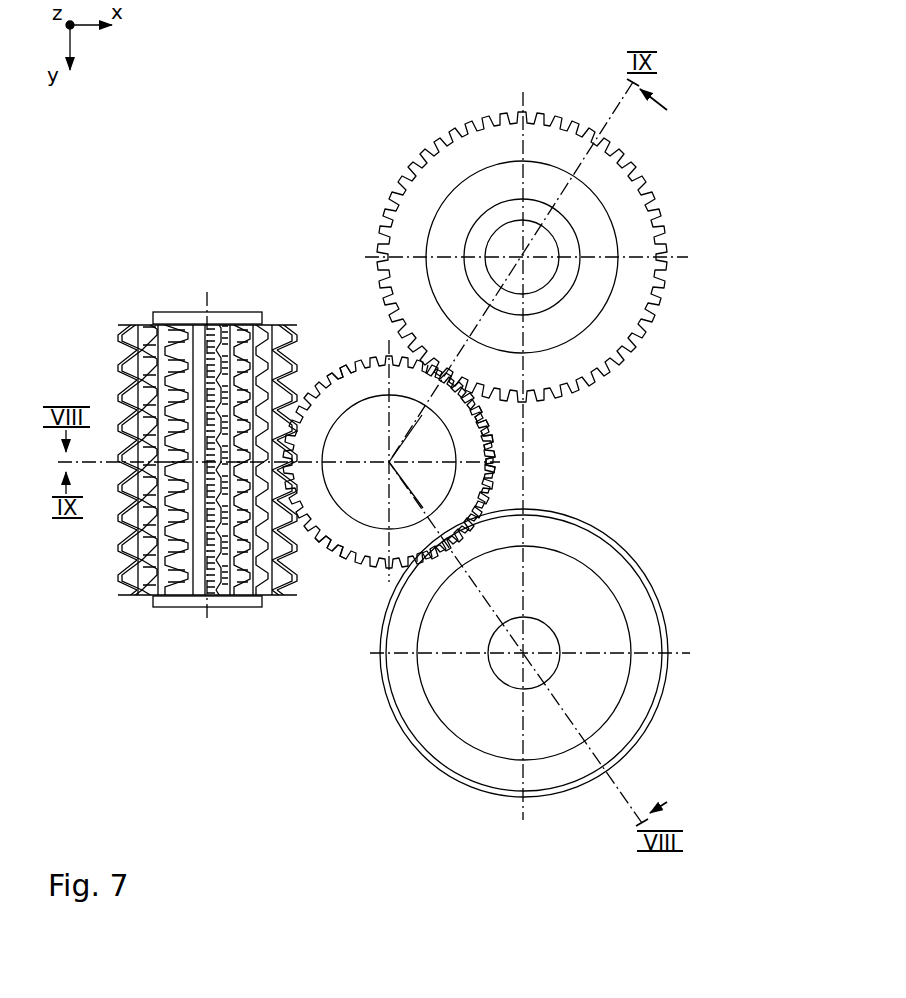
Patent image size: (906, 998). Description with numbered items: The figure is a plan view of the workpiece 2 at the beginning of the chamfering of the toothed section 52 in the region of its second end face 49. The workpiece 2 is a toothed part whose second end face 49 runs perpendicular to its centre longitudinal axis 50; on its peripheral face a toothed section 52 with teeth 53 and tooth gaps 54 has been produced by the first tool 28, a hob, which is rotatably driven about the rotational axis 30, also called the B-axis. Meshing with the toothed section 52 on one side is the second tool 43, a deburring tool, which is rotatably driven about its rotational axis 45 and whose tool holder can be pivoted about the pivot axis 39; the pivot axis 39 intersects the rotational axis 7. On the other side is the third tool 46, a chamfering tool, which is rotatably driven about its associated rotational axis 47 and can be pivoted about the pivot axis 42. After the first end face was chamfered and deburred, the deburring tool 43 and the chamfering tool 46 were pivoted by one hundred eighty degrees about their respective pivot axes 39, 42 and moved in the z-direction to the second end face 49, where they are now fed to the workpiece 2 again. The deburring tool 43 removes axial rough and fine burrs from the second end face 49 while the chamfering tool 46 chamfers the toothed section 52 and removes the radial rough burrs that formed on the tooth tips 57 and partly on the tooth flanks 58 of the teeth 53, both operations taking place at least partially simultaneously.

The workpiece 2 is at (372, 355).
The rotational axis 7 is at (521, 438).
The first tool 28 is at (207, 419).
The rotational axis 30 is at (205, 295).
The pivot axis 39 is at (580, 748).
The pivot axis 42 is at (575, 172).
The second tool 43 is at (578, 653).
The rotational axis 45 is at (527, 653).
The third tool 46 is at (576, 257).
The rotational axis 47 is at (523, 258).
The second end face 49 is at (342, 370).
The centre longitudinal axis 50 is at (529, 393).
The toothed section 52 is at (503, 441).
The teeth 53 is at (487, 460).
The tooth gaps 54 is at (483, 422).
The tooth tips 57 is at (342, 553).
The tooth flanks 58 is at (348, 565).